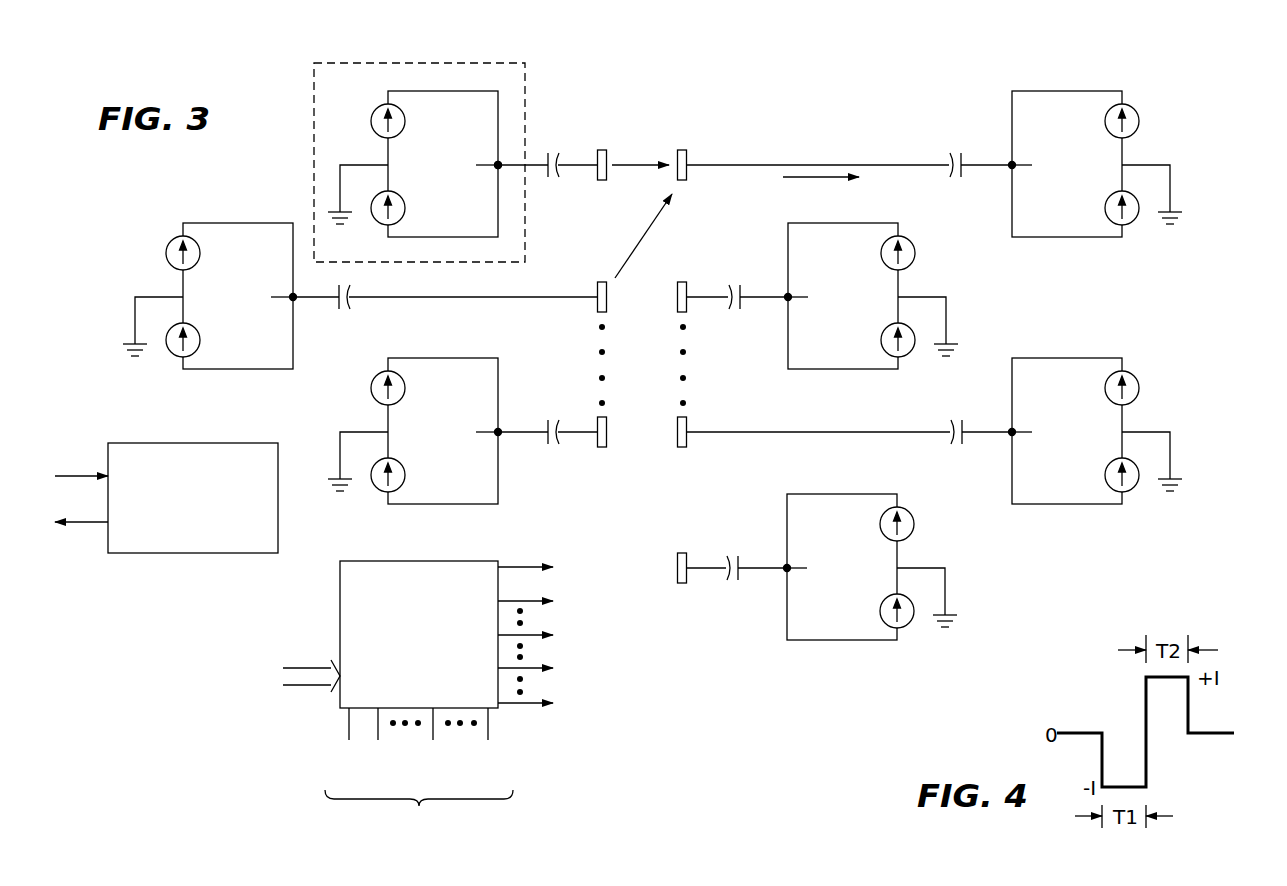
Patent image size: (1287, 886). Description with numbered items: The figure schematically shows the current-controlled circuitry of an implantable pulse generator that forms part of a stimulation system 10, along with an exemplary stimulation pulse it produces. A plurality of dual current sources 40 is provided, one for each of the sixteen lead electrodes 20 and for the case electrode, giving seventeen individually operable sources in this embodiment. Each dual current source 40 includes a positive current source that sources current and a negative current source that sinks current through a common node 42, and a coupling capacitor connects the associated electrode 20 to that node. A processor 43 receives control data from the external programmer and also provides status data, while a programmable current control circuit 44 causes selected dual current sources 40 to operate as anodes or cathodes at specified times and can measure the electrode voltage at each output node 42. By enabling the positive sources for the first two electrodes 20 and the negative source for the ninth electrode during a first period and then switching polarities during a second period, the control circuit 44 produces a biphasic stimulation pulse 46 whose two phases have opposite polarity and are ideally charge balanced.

In FIG. 3, the stimulation system 10 is at (146, 640).
In FIG. 3, the electrode 20 is at (608, 153).
In FIG. 3, the dual current source 40 is at (368, 62).
In FIG. 3, the common node 42 is at (502, 165).
In FIG. 3, the processor 43 is at (194, 443).
In FIG. 3, the programmable current control circuit 44 is at (340, 602).
In FIG. 4, the biphasic stimulation pulse 46 is at (1146, 688).